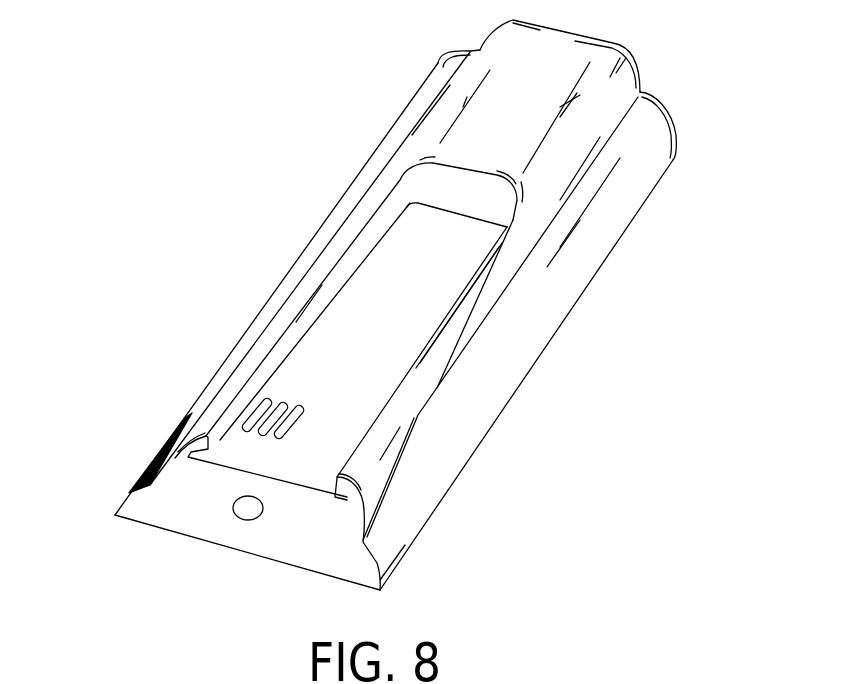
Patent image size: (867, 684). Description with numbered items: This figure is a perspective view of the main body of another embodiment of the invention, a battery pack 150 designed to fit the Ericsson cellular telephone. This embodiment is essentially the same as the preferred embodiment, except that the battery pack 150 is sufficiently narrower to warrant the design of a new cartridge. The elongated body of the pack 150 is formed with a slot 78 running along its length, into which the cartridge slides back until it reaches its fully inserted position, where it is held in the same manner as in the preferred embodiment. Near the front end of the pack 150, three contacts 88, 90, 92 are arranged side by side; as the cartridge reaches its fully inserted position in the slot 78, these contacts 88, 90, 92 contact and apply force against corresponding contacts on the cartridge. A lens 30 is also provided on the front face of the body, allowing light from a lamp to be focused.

The battery pack 150 is at (590, 105).
The slot 78 is at (340, 479).
The lens 30 is at (243, 512).
The contact 88 is at (247, 426).
The contact 90 is at (272, 418).
The contact 92 is at (297, 405).